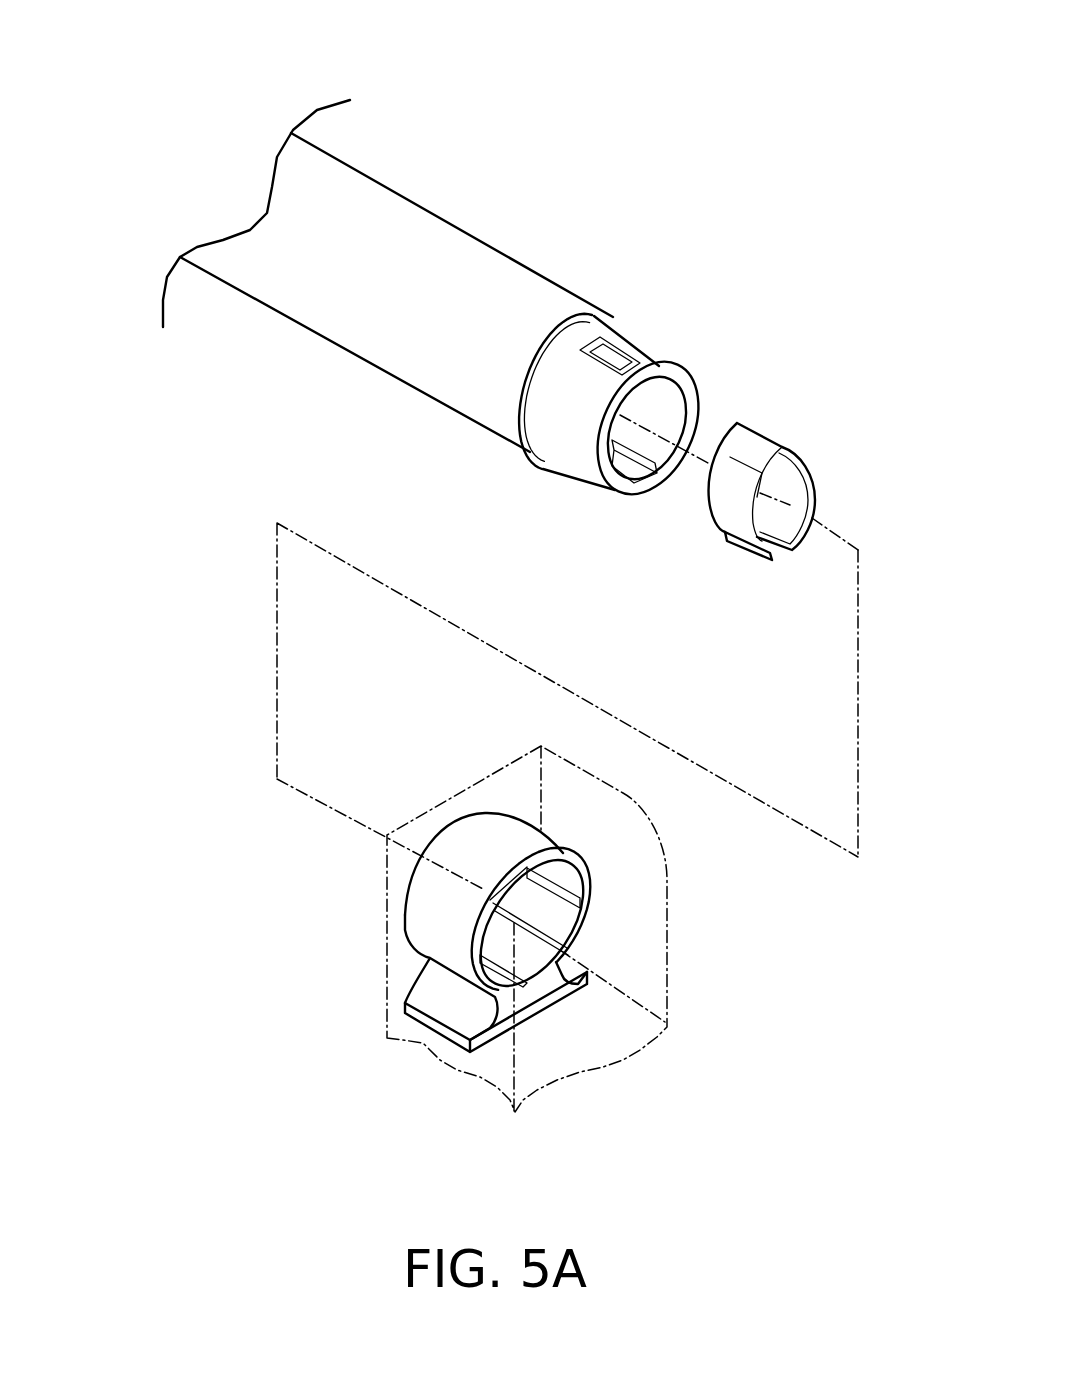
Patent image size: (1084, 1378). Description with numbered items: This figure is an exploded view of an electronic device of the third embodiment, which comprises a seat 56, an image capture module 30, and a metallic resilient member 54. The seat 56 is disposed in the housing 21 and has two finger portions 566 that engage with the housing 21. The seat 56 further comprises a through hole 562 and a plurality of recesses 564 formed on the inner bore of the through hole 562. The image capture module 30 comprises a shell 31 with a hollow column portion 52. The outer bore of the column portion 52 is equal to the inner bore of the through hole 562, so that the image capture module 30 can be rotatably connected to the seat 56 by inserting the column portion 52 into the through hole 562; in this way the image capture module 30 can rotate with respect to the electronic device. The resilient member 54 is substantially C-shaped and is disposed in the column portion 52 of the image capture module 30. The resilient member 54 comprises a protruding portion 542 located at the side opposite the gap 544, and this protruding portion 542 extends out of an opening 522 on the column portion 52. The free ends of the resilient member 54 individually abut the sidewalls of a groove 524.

The image capture module 30 is at (358, 166).
The shell 31 is at (380, 203).
The column portion 52 is at (655, 362).
The opening 522 is at (610, 352).
The groove 524 is at (610, 472).
The resilient member 54 is at (797, 468).
The protruding portion 542 is at (748, 440).
The gap 544 is at (776, 561).
The housing 21 is at (640, 897).
The seat 56 is at (563, 978).
The through hole 562 is at (582, 897).
The recesses 564 is at (532, 981).
The finger portions 566 is at (587, 983).